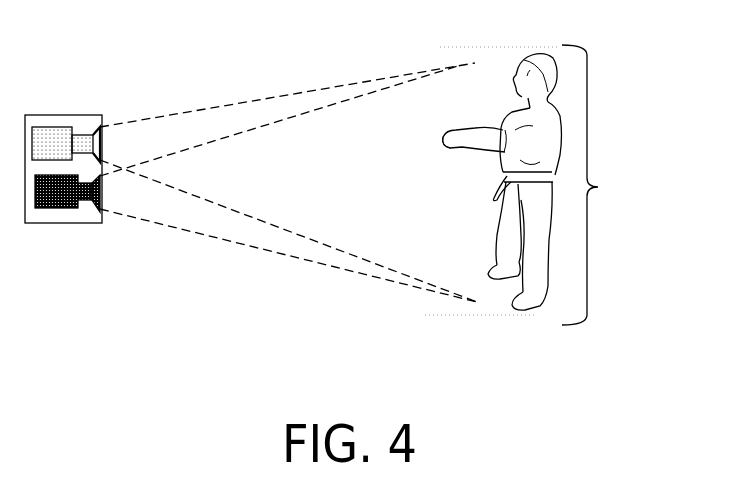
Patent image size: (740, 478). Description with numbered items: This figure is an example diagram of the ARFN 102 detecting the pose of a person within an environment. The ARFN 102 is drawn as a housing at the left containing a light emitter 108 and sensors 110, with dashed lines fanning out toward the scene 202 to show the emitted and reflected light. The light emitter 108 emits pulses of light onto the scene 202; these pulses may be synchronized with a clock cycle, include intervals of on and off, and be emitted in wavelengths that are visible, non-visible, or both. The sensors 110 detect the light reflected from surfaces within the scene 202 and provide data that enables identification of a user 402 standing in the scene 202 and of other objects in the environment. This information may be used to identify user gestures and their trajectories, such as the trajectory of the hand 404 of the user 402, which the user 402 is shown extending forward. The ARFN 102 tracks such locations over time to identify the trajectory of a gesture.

The ARFN 102 is at (37, 223).
The light emitter 108 is at (52, 143).
The sensors 110 is at (58, 211).
The scene 202 is at (402, 21).
The user 402 is at (550, 110).
The hand 404 is at (441, 128).